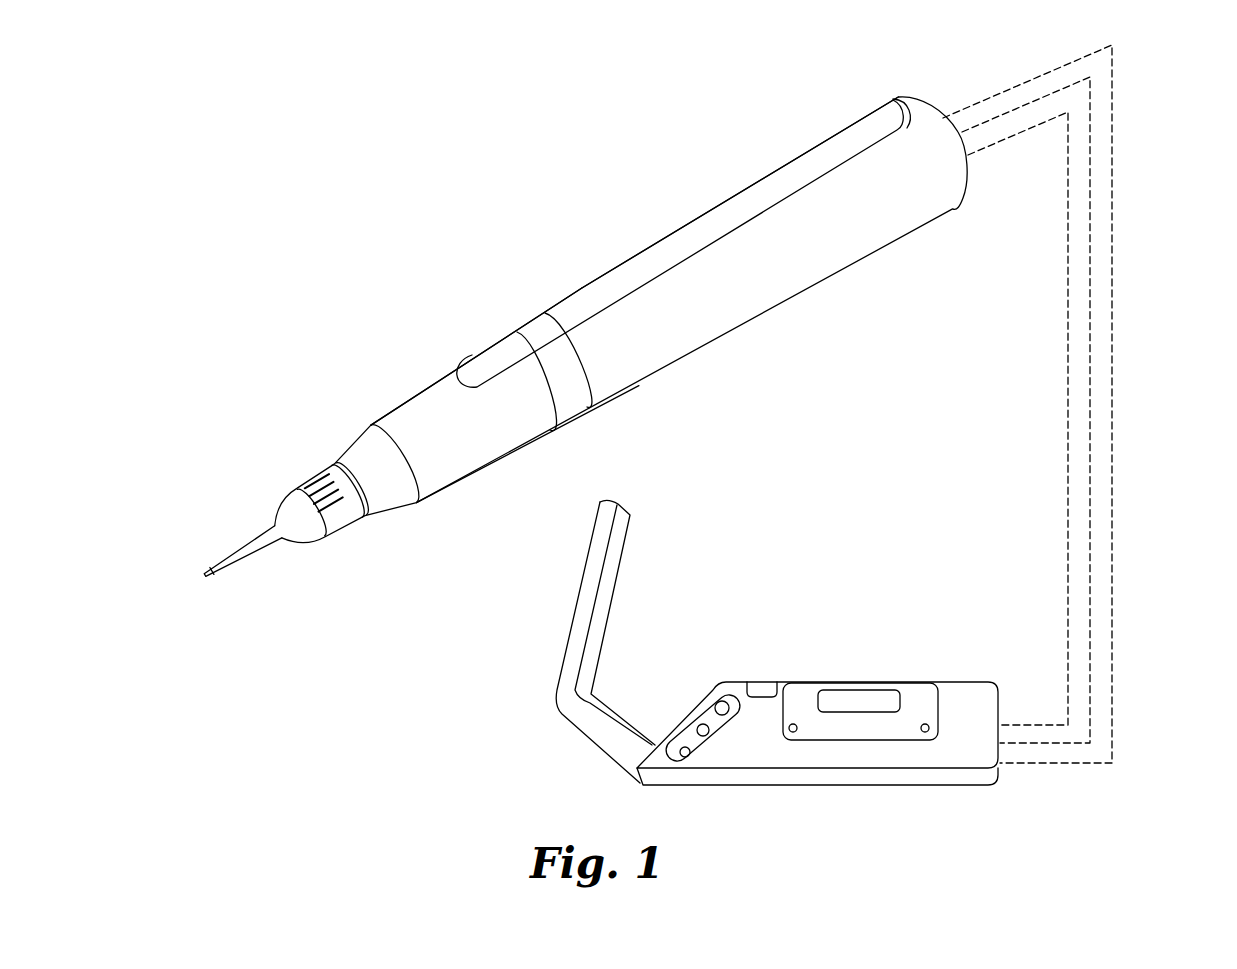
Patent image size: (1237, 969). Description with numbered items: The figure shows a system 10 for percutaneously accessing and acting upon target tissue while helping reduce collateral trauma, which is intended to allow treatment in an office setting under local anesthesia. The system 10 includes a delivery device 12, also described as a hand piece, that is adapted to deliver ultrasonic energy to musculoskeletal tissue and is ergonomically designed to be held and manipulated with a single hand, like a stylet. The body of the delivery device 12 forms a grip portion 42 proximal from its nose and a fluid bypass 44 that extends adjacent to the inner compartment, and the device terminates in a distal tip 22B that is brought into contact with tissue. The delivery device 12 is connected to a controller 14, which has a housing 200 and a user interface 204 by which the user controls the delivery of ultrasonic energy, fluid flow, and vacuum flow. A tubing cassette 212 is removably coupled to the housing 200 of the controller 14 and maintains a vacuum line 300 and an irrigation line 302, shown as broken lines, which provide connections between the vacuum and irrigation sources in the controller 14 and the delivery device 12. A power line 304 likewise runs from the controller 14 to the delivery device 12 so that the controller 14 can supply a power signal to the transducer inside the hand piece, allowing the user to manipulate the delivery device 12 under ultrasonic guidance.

The system 10 is at (325, 172).
The delivery device 12 is at (585, 367).
The controller 14 is at (750, 677).
The treatment tip 22B is at (207, 579).
The grip portion 42 is at (537, 428).
The fluid bypass 44 is at (703, 218).
The housing 200 is at (805, 768).
The user interface 204 is at (558, 605).
The tubing cassette 212 is at (915, 696).
The vacuum line 300 is at (1090, 498).
The irrigation line 302 is at (1068, 455).
The power line 304 is at (1112, 562).